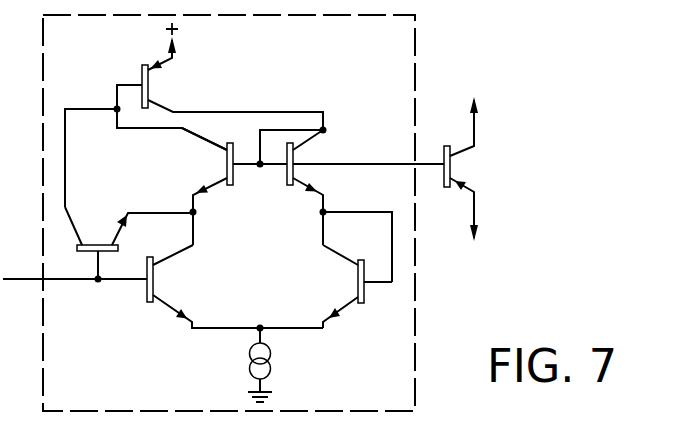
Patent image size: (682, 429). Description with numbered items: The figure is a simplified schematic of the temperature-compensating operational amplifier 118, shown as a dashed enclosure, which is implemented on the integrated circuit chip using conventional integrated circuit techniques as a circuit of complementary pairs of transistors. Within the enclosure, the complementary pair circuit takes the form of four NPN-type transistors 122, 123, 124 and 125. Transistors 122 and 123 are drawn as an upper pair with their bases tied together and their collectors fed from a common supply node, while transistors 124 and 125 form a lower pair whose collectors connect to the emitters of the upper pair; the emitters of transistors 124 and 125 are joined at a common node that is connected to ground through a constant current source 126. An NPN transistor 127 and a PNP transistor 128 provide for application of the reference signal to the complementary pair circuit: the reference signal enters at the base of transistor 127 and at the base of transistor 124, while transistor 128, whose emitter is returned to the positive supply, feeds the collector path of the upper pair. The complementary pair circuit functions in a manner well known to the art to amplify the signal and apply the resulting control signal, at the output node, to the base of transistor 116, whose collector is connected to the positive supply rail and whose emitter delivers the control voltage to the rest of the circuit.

The temperature-compensating operational amplifier 118 is at (417, 32).
The PNP transistor 128 is at (149, 90).
The NPN-type transistor 122 is at (230, 186).
The NPN-type transistor 123 is at (290, 186).
The transistor 116 is at (447, 188).
The NPN transistor 127 is at (98, 244).
The NPN-type transistor 124 is at (147, 288).
The NPN-type transistor 125 is at (364, 297).
The constant current source 126 is at (271, 366).